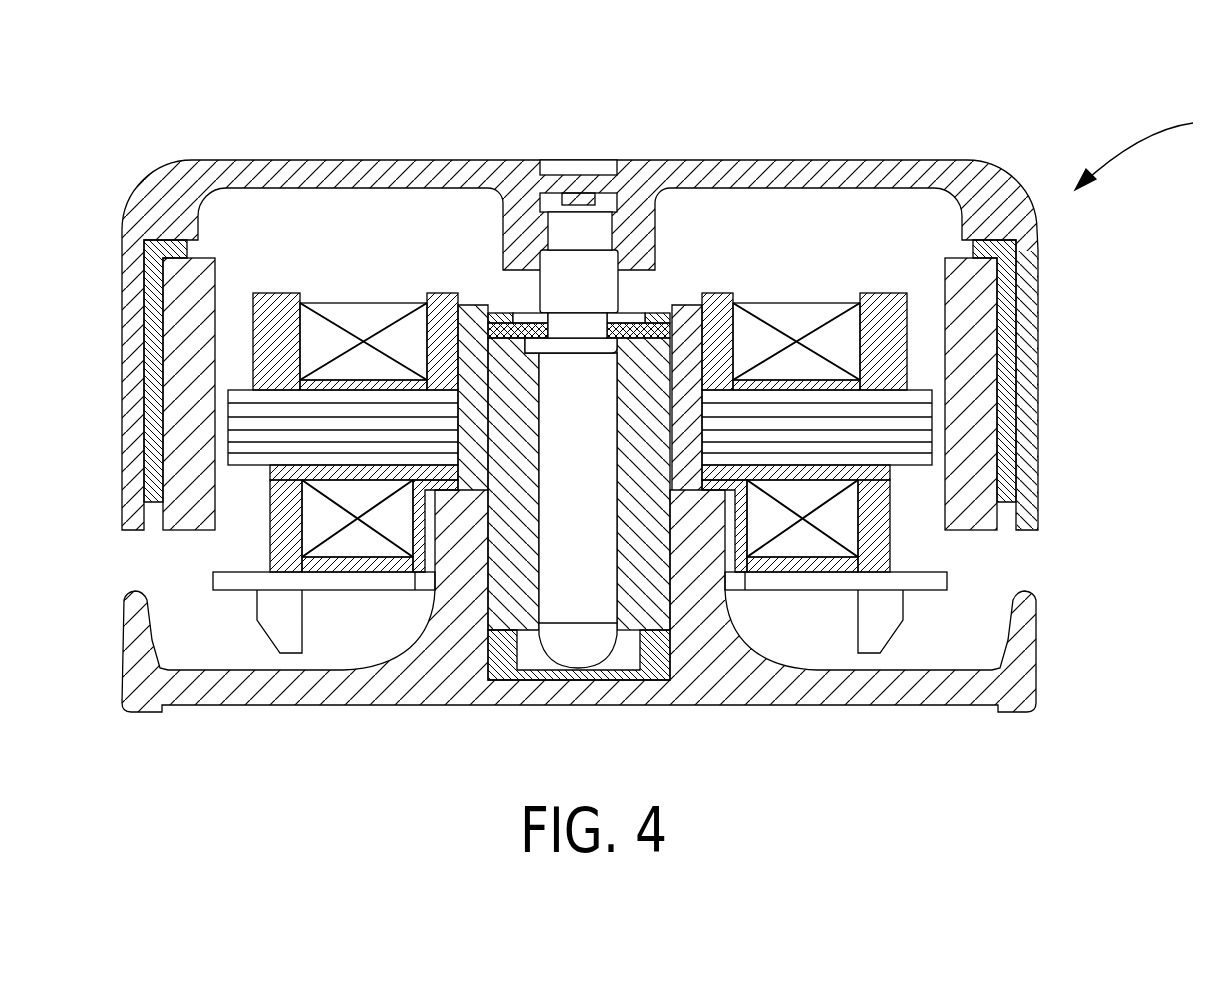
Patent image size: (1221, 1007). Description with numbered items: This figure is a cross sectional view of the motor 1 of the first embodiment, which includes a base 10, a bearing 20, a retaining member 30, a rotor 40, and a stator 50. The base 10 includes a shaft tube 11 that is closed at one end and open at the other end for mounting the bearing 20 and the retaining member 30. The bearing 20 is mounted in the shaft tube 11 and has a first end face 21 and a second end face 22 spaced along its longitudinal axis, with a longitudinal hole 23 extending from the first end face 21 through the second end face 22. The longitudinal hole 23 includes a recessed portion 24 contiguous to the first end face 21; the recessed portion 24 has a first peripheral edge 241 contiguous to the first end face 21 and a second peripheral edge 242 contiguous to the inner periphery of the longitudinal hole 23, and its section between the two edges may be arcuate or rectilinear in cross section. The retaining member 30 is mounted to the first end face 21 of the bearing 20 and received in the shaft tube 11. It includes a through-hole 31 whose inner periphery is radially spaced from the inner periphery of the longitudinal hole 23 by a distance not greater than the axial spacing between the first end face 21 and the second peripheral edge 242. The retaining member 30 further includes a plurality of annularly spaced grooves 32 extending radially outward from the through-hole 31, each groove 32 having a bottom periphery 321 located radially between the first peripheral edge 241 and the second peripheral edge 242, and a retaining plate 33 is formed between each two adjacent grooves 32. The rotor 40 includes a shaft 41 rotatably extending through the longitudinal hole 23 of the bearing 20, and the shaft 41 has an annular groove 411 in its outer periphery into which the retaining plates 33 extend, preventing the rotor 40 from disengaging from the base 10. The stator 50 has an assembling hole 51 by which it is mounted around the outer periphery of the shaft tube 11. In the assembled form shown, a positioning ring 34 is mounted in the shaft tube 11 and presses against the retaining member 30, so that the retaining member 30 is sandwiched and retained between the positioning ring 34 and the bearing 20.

The motor 1 is at (1145, 149).
The base 10 is at (1030, 635).
The shaft tube 11 is at (730, 338).
The bearing 20 is at (487, 387).
The first end face 21 is at (508, 350).
The second end face 22 is at (525, 667).
The longitudinal hole 23 is at (508, 440).
The recessed portion 24 is at (623, 347).
The first peripheral edge 241 is at (650, 320).
The second peripheral edge 242 is at (570, 340).
The retaining member 30 is at (668, 350).
The through-hole 31 is at (620, 325).
The grooves 32 is at (541, 330).
The bottom periphery 321 is at (533, 330).
The retaining plate 33 is at (552, 338).
The positioning ring 34 is at (487, 360).
The rotor 40 is at (950, 160).
The shaft 41 is at (587, 597).
The annular groove 411 is at (580, 343).
The stator 50 is at (900, 340).
The assembling hole 51 is at (767, 303).